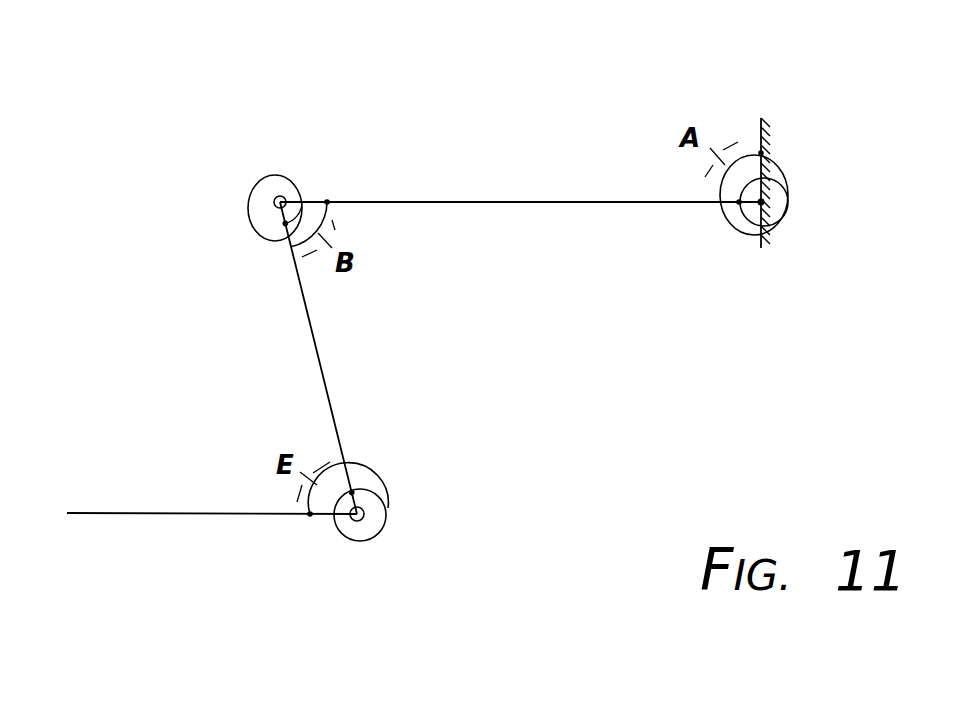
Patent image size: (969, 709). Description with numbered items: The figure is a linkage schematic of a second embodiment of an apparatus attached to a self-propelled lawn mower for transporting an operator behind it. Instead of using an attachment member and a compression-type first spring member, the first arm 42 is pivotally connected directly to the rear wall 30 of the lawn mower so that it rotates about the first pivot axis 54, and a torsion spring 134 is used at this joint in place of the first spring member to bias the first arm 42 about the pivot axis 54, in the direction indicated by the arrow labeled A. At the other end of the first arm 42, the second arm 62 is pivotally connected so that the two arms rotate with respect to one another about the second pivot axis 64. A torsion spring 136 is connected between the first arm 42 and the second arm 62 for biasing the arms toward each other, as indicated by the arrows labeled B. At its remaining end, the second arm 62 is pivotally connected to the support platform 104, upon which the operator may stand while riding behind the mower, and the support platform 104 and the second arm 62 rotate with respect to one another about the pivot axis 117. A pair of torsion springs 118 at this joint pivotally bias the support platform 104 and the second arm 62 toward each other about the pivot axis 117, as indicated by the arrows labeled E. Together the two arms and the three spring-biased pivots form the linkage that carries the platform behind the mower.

The rear wall 30 is at (760, 120).
The first arm 42 is at (563, 200).
The first pivot axis 54 is at (760, 205).
The second arm 62 is at (325, 392).
The second pivot axis 64 is at (277, 198).
The support platform 104 is at (223, 513).
The pivot axis 117 is at (357, 514).
The torsion springs 118 is at (388, 508).
The torsion spring 134 is at (728, 225).
The torsion spring 136 is at (247, 212).